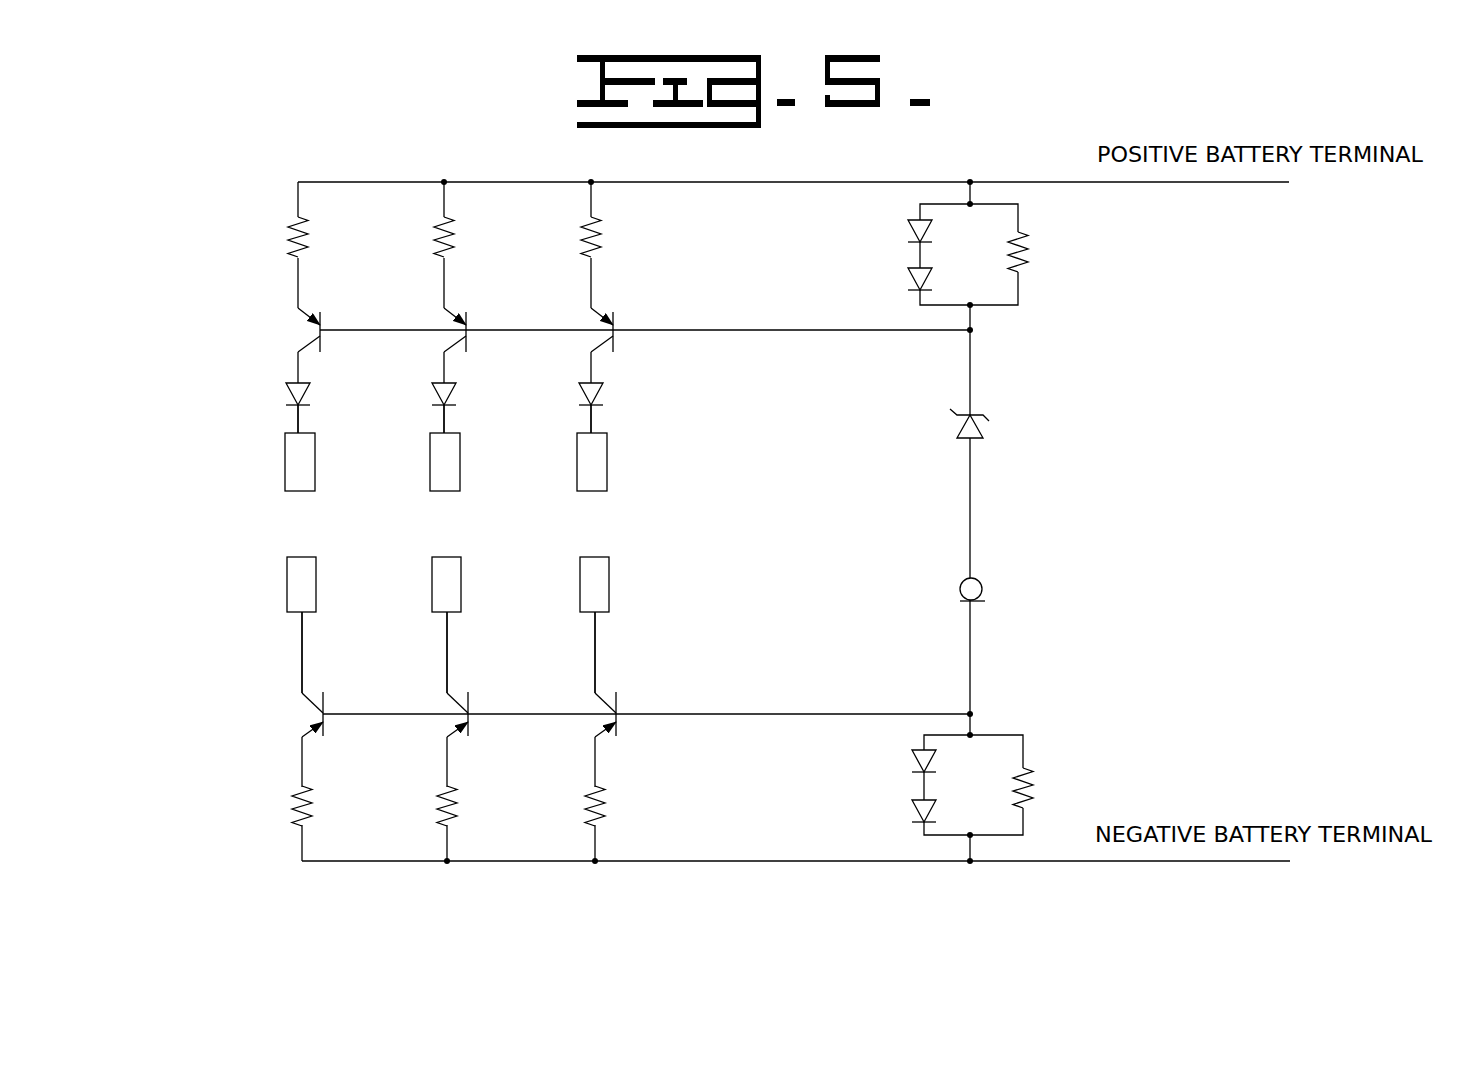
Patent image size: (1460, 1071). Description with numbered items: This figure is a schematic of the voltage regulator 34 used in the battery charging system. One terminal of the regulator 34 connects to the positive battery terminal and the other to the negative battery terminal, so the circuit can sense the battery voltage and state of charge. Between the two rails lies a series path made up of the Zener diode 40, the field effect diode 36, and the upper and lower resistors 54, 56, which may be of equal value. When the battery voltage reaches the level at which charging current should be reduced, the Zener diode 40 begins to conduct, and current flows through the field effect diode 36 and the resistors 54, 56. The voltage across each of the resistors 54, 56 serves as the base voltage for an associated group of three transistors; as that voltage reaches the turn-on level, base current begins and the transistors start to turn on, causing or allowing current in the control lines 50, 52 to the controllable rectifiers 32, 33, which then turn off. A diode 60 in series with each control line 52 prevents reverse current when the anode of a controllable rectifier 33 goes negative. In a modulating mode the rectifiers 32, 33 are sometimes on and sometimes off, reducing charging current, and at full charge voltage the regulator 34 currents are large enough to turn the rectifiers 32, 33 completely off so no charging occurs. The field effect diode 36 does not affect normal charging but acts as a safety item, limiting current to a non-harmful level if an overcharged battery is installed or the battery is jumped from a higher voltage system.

The controllable rectifier 32 is at (274, 563).
The controllable rectifier 33 is at (326, 495).
The voltage regulator 34 is at (252, 233).
The field effect diode 36 is at (988, 607).
The Zener diode 40 is at (957, 432).
The control line 50 is at (278, 650).
The control line 52 is at (277, 420).
The upper resistor 54 is at (1028, 256).
The lower resistor 56 is at (1033, 790).
The diode 60 is at (311, 388).